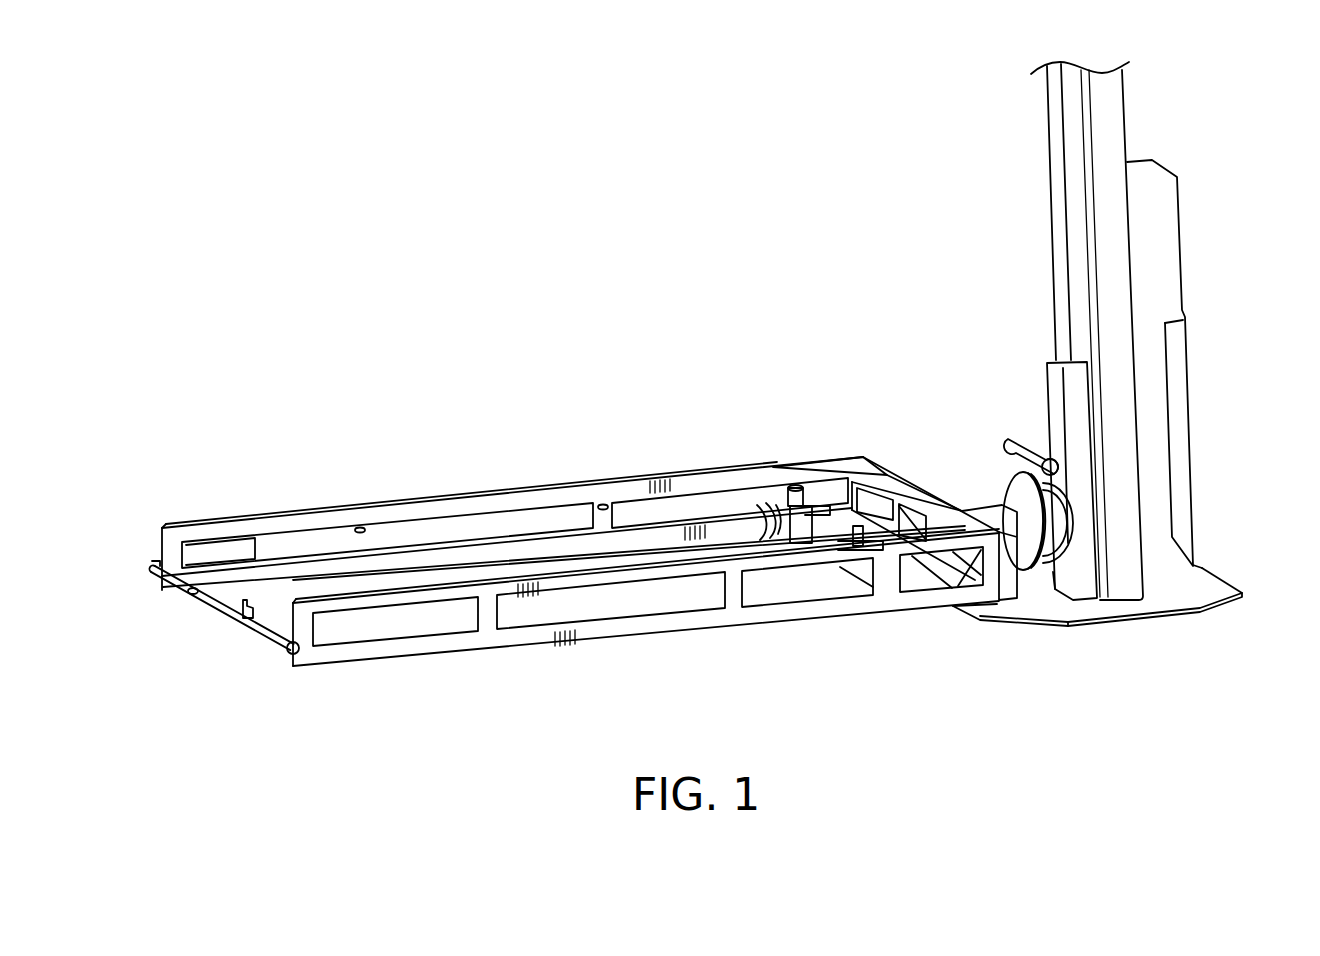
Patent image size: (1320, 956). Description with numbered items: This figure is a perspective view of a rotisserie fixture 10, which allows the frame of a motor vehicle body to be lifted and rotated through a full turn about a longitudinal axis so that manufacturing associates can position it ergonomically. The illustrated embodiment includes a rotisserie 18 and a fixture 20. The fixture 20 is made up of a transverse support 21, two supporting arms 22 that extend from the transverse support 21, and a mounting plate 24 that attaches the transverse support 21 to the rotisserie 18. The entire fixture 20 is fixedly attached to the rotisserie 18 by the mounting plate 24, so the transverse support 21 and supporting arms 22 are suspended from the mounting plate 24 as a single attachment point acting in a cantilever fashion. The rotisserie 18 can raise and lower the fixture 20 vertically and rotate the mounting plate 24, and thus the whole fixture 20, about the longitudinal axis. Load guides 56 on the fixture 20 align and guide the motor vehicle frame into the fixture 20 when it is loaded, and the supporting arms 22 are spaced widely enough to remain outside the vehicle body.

The rotisserie fixture 10 is at (974, 345).
The rotisserie 18 is at (1148, 190).
The fixture 20 is at (887, 603).
The transverse support 21 is at (910, 490).
The supporting arms 22 is at (713, 471).
The mounting plate 24 is at (1022, 553).
The load guides 56 is at (360, 527).